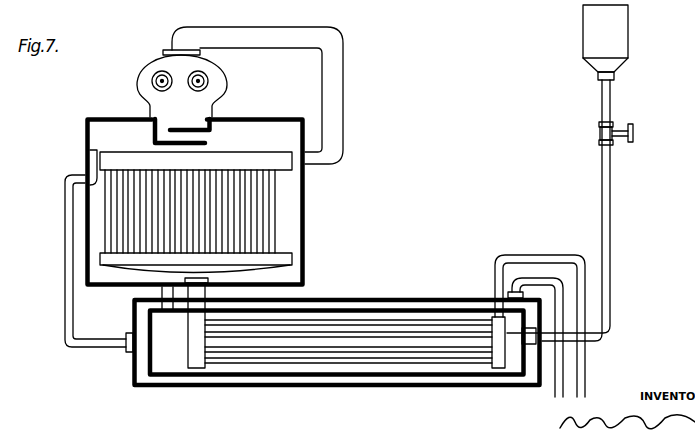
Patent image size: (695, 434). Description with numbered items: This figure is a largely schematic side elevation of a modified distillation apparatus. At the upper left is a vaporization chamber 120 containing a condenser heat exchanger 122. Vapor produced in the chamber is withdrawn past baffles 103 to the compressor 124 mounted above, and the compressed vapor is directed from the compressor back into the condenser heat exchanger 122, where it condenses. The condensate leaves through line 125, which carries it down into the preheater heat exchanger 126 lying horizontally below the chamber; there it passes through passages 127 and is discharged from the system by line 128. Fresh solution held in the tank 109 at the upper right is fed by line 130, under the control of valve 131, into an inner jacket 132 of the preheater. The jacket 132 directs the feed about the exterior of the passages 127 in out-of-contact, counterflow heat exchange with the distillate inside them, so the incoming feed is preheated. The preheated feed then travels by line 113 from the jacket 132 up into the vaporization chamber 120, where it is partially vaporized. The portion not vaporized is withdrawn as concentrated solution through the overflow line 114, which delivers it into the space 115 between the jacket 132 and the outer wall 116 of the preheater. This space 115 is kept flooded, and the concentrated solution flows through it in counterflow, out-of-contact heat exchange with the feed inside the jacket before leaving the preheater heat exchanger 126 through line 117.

The baffles 103 is at (152, 140).
The tank 109 is at (622, 33).
The line 113 is at (160, 293).
The overflow line 114 is at (66, 238).
The space 115 is at (337, 344).
The outer wall 116 is at (130, 368).
The line 117 is at (557, 387).
The vaporization chamber 120 is at (303, 244).
The condenser heat exchanger 122 is at (278, 208).
The compressor 124 is at (157, 62).
The line 125 is at (196, 315).
The preheater heat exchanger 126 is at (449, 292).
The passages 127 is at (293, 360).
The line 128 is at (583, 357).
The line 130 is at (612, 195).
The valve 131 is at (600, 133).
The inner jacket 132 is at (170, 376).